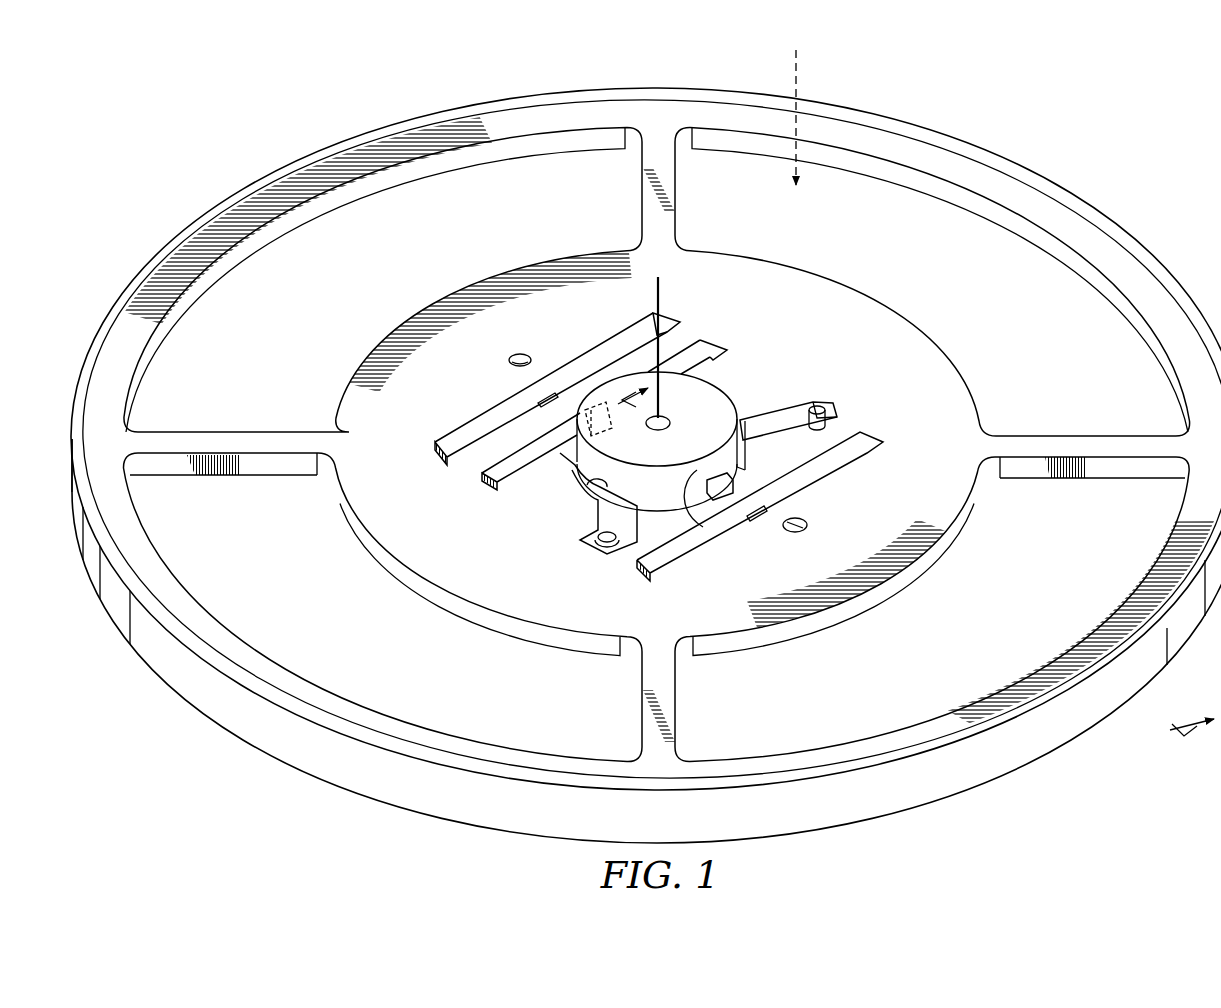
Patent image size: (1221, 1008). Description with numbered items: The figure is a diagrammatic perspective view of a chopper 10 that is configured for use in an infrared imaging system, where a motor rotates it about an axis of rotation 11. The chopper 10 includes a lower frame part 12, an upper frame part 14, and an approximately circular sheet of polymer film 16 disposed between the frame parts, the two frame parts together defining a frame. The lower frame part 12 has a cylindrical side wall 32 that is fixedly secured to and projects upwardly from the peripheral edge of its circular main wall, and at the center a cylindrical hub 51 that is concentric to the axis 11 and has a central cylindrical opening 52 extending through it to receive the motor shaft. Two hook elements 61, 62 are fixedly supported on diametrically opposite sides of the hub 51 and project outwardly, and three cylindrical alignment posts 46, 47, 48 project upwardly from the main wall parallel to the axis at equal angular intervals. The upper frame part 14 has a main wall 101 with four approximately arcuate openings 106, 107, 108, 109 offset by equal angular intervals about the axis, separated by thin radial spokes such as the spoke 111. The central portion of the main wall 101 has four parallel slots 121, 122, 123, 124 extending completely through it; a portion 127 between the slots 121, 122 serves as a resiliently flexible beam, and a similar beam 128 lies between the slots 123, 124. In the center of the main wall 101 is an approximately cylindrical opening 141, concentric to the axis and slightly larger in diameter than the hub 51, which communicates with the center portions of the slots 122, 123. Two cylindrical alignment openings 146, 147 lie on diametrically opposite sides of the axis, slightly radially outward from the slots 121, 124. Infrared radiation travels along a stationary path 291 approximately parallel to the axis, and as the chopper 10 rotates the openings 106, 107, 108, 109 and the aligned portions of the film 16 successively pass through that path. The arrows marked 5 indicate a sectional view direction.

The chopper 10 is at (350, 97).
The lower frame part 12 is at (1075, 748).
The upper frame part 14 is at (108, 373).
The sheet of polymer film 16 is at (239, 562).
The cylindrical side wall 32 is at (645, 830).
The main wall 101 is at (366, 452).
The opening 106 is at (860, 168).
The opening 107 is at (920, 722).
The opening 108 is at (366, 702).
The opening 109 is at (493, 155).
The radial spoke 111 is at (655, 224).
The path 291 is at (804, 78).
The axis of rotation 11 is at (656, 291).
The cylindrical hub 51 is at (721, 410).
The central cylindrical opening 52 is at (671, 419).
The hook element 61 is at (614, 432).
The section line 5 is at (915, 565).
The slot 121 is at (482, 410).
The beam 127 is at (688, 331).
The slot 122 is at (723, 337).
The slot 123 is at (631, 560).
The slot 124 is at (870, 458).
The beam 128 is at (842, 422).
The cylindrical alignment post 47 is at (808, 406).
The cylindrical alignment post 46 is at (531, 358).
The cylindrical alignment opening 146 is at (508, 358).
The cylindrical alignment opening 147 is at (808, 523).
The opening 141 is at (594, 488).
The cylindrical alignment post 48 is at (592, 531).
The hook element 62 is at (691, 475).